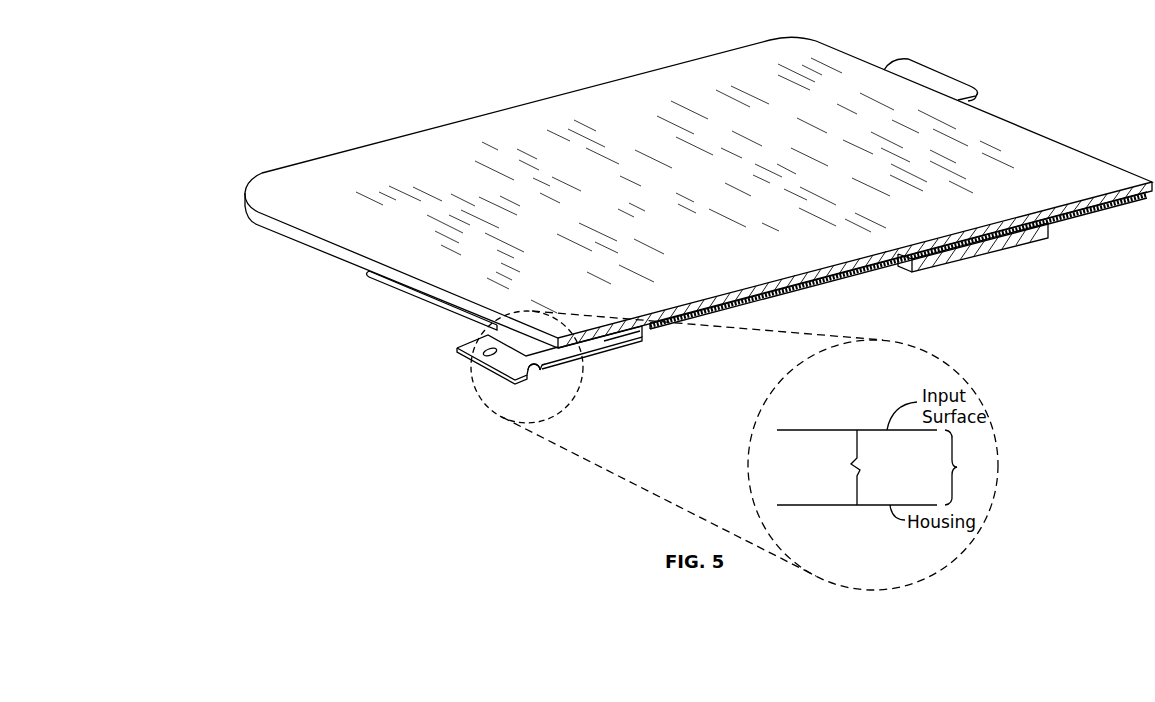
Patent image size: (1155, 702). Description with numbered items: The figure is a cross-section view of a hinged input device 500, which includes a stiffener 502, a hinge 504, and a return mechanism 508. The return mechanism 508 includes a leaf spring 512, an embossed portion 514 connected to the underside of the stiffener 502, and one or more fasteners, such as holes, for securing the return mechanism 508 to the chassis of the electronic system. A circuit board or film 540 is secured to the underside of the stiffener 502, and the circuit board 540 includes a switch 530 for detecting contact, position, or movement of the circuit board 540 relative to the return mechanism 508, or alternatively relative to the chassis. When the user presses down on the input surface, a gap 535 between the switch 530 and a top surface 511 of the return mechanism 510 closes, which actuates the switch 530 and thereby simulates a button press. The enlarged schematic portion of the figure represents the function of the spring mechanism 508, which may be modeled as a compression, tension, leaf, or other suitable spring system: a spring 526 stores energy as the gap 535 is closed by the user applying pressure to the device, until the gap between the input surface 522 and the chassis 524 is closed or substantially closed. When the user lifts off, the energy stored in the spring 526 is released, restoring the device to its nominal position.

The input device 500 is at (395, 43).
The stiffener 502 is at (382, 142).
The hinge 504 is at (950, 77).
The return mechanism 508 is at (480, 373).
The return mechanism 510 is at (536, 374).
The top surface 511 is at (578, 362).
The leaf spring 512 is at (410, 296).
The embossed portion 514 is at (367, 271).
The input surface 522 is at (810, 430).
The chassis 524 is at (815, 505).
The spring 526 is at (863, 475).
The switch 530 is at (607, 348).
The gap 535 is at (652, 338).
The circuit board 540 is at (787, 295).